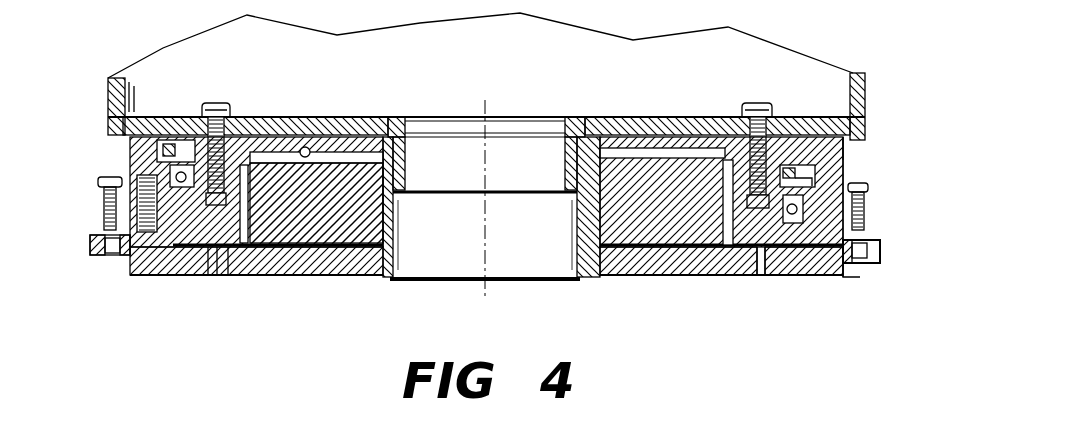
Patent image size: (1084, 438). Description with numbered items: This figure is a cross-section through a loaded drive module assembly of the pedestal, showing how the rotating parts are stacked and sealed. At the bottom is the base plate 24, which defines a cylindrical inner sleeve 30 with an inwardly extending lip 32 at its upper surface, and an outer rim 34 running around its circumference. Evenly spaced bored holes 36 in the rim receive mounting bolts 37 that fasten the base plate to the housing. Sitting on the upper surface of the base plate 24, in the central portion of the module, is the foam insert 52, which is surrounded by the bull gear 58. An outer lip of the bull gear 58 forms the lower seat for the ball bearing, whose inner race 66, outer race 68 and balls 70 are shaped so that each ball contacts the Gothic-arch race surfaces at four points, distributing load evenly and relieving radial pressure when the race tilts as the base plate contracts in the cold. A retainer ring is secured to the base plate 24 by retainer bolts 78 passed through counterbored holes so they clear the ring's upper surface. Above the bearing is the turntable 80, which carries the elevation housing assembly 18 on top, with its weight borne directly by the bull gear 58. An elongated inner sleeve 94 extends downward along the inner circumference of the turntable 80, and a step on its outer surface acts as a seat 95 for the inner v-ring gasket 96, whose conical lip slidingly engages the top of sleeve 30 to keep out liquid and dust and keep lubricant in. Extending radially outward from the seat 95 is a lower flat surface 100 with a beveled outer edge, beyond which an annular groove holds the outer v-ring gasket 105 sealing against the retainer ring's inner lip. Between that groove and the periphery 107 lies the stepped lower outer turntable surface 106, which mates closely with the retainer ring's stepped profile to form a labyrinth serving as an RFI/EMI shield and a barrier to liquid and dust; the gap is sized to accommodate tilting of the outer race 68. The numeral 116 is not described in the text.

The elevation housing assembly 18 is at (477, 65).
The base plate 24 is at (143, 277).
The inner sleeve 30 is at (575, 237).
The inwardly extending lip 32 is at (577, 200).
The outer rim 34 is at (868, 262).
The bored holes 36 is at (861, 280).
The mounting bolts 37 is at (867, 210).
The insert 52 is at (302, 277).
The bull gear 58 is at (228, 277).
The inner race 66 is at (770, 280).
The outer race 68 is at (807, 280).
The balls 70 is at (172, 277).
The retainer bolts 78 is at (843, 182).
The turntable 80 is at (648, 137).
The elongated inner sleeve 94 is at (575, 165).
The seat 95 is at (408, 175).
The inner v-ring gasket 96 is at (583, 138).
The lower flat surface 100 is at (310, 130).
The outer v-ring gasket 105 is at (180, 115).
The lower outer turntable surface 106 is at (128, 156).
The periphery 107 is at (853, 158).
The base plate 116 is at (210, 278).